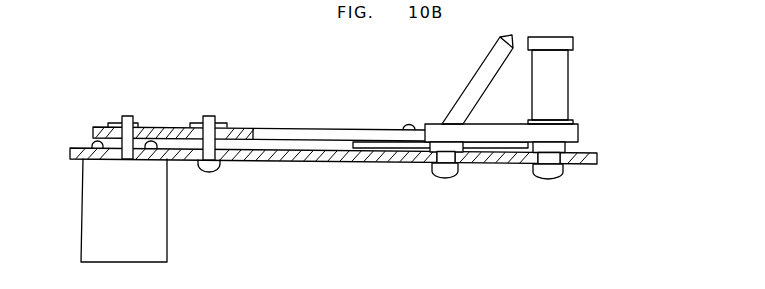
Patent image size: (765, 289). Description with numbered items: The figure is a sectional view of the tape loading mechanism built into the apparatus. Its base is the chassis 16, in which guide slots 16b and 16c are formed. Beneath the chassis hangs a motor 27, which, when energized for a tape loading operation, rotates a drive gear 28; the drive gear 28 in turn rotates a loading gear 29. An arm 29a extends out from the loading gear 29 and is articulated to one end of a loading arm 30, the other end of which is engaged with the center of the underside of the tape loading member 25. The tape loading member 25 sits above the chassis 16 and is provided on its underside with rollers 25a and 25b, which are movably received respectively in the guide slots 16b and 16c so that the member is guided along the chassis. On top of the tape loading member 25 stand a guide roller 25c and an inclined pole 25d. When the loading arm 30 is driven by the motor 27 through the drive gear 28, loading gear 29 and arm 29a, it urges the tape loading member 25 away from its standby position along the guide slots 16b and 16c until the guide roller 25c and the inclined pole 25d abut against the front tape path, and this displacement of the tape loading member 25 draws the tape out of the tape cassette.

The chassis 16 is at (292, 155).
The guide slot 16b is at (455, 172).
The guide slot 16c is at (561, 176).
The tape loading member 25 is at (578, 133).
The roller 25a is at (445, 163).
The roller 25b is at (550, 165).
The guide roller 25c is at (568, 75).
The inclined pole 25d is at (470, 84).
The motor 27 is at (168, 224).
The drive gear 28 is at (99, 127).
The loading gear 29 is at (177, 127).
The arm 29a is at (293, 129).
The loading arm 30 is at (393, 152).